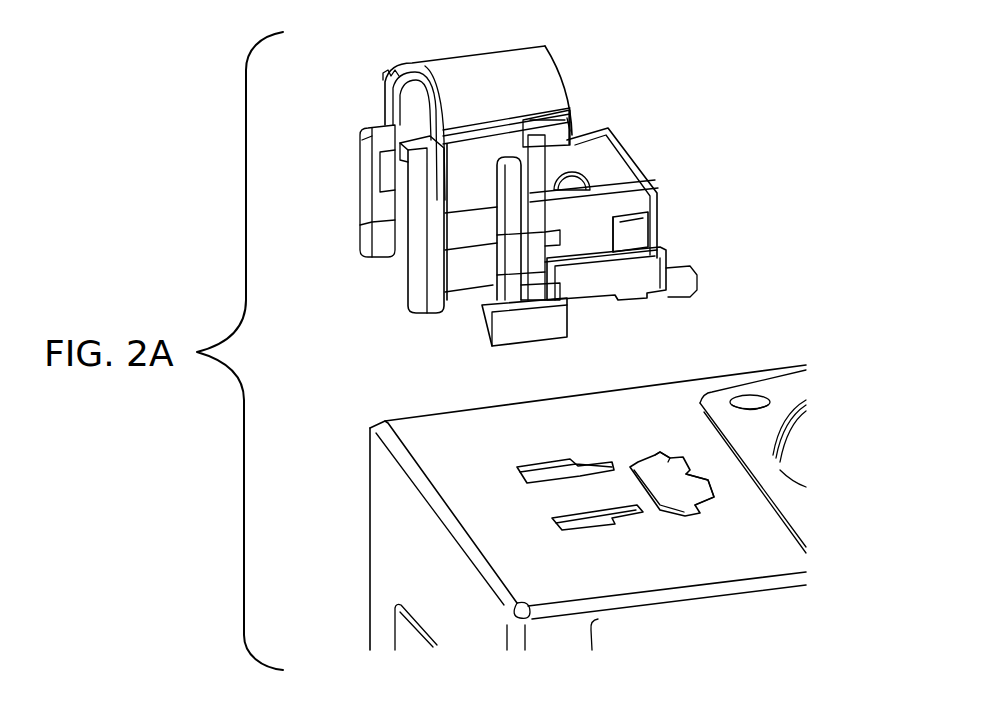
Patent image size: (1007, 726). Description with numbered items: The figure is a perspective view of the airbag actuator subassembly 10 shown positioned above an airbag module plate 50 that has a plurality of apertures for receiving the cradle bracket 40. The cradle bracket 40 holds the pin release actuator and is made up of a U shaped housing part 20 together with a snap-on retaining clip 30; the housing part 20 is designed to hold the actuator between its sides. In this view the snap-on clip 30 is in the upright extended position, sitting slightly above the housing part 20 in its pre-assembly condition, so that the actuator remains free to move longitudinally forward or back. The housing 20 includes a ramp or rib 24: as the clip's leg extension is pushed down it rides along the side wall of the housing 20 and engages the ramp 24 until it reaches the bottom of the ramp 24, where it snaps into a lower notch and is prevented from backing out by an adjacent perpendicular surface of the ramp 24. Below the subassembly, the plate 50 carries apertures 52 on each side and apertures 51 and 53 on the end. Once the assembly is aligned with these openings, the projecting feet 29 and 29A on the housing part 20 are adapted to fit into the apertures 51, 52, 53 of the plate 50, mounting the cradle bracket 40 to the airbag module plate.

The airbag actuator subassembly 10 is at (647, 106).
The U shaped housing part 20 is at (650, 212).
The ramp 24 is at (560, 258).
The projecting foot 29 is at (698, 289).
The projecting foot 29A is at (530, 336).
The snap-on retaining clip 30 is at (383, 92).
The cradle bracket 40 is at (375, 272).
The plate 50 is at (727, 485).
The aperture 51 is at (660, 497).
The apertures 52 is at (557, 473).
The aperture 53 is at (657, 457).